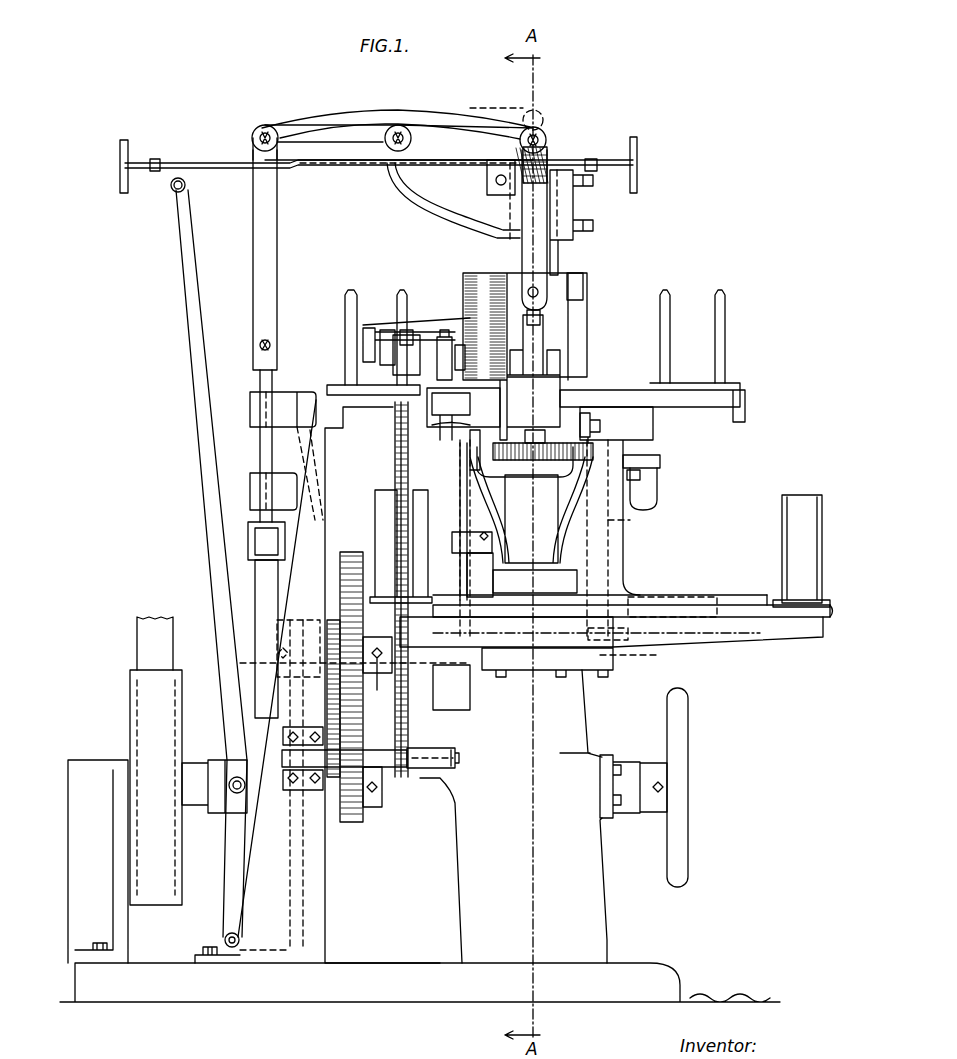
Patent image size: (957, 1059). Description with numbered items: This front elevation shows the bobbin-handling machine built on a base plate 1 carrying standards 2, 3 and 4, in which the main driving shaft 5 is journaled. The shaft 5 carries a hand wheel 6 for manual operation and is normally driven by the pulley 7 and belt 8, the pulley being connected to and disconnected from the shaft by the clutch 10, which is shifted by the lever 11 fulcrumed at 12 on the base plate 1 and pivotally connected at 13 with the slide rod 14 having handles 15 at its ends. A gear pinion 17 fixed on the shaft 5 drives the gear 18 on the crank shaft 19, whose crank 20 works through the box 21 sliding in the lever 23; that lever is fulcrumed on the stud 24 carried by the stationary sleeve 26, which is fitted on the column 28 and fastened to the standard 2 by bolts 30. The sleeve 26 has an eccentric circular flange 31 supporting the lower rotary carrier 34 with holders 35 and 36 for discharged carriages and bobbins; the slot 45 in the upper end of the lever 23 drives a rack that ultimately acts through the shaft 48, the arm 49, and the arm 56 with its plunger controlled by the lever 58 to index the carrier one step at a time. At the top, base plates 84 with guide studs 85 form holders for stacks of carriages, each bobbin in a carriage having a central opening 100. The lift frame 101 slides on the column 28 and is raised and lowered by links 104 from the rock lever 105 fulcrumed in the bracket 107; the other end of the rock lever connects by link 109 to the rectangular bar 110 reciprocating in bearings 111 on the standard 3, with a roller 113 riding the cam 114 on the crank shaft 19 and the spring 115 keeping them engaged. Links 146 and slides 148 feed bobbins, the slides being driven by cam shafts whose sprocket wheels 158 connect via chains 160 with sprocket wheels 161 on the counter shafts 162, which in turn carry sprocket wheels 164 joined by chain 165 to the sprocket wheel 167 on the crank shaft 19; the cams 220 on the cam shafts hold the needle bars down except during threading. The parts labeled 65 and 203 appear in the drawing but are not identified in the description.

The base plate 1 is at (378, 1000).
The standard 2 is at (513, 814).
The standard 3 is at (325, 885).
The standard 4 is at (98, 861).
The main driving shaft 5 is at (427, 805).
The hand wheel 6 is at (688, 772).
The pulley 7 is at (156, 787).
The belt 8 is at (155, 645).
The clutch 10 is at (228, 762).
The lever 11 is at (225, 672).
The fulcrum 12 is at (224, 936).
The pivotal connection 13 is at (170, 200).
The slide rod 14 is at (230, 170).
The handles 15 is at (640, 215).
The gear pinion 17 is at (355, 822).
The gear 18 is at (350, 552).
The crank shaft 19 is at (355, 673).
The crank 20 is at (506, 543).
The box 21 is at (478, 617).
The lever 23 is at (467, 575).
The stud 24 is at (449, 554).
The stationary sleeve 26 is at (531, 525).
The column 28 is at (558, 258).
The bolts 30 is at (550, 690).
The circular flange 31 is at (812, 630).
The lower rotary carrier 34 is at (745, 595).
The holders 35 is at (370, 522).
The holders 36 is at (800, 495).
The slot 45 is at (620, 642).
The shaft 48 is at (635, 533).
The arm 49 is at (688, 597).
The arm 56 is at (655, 455).
The lever 58 is at (640, 478).
The gear 65 is at (535, 460).
The base plates 84 is at (745, 390).
The guide studs 85 is at (735, 275).
The central opening 100 is at (399, 138).
The lift frame 101 is at (440, 322).
The links 104 is at (522, 222).
The rock lever 105 is at (414, 122).
The bracket 107 is at (453, 199).
The link 109 is at (277, 255).
The rectangular bar 110 is at (272, 378).
The bearings 111 is at (240, 490).
The roller 113 is at (248, 545).
The cam 114 is at (255, 605).
The spring 115 is at (548, 150).
The links 146 is at (510, 462).
The slides 148 is at (590, 428).
The sprocket wheels 158 is at (395, 432).
The chains 160 is at (460, 465).
The sprocket wheels 161 is at (440, 748).
The counter shafts 162 is at (344, 698).
The sprocket wheels 164 is at (305, 795).
The chain 165 is at (298, 665).
The sprocket wheel 167 is at (316, 620).
The pipe 203 is at (440, 440).
The cams 220 is at (472, 475).